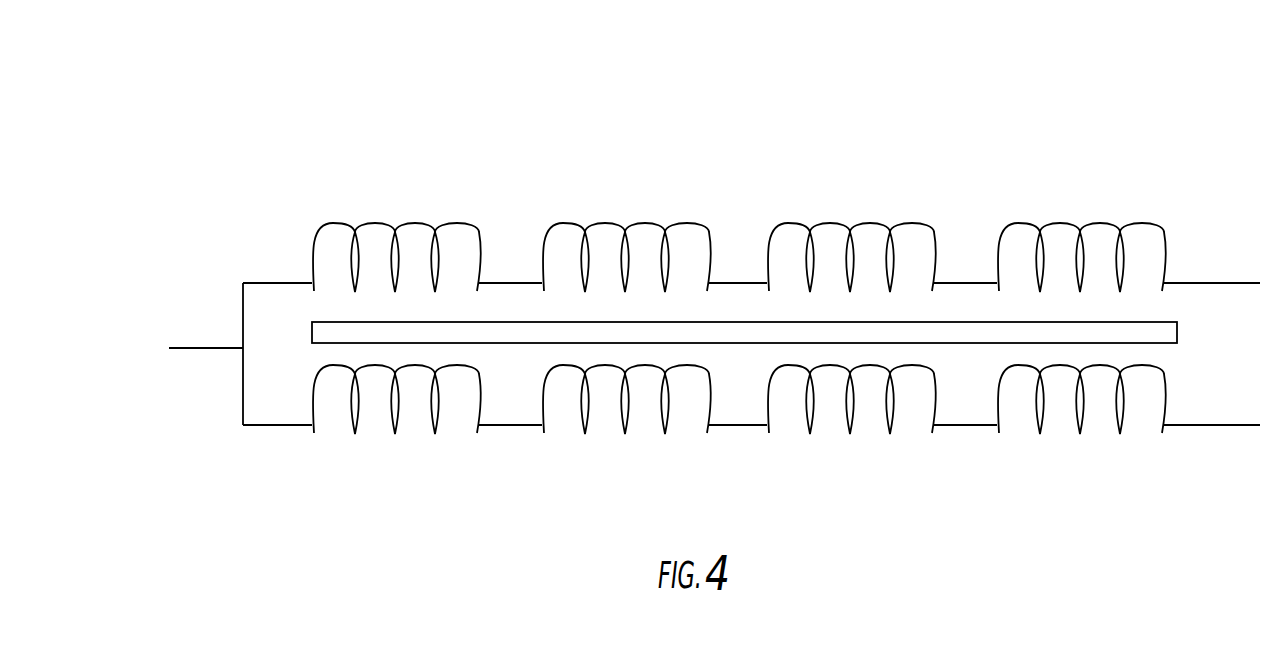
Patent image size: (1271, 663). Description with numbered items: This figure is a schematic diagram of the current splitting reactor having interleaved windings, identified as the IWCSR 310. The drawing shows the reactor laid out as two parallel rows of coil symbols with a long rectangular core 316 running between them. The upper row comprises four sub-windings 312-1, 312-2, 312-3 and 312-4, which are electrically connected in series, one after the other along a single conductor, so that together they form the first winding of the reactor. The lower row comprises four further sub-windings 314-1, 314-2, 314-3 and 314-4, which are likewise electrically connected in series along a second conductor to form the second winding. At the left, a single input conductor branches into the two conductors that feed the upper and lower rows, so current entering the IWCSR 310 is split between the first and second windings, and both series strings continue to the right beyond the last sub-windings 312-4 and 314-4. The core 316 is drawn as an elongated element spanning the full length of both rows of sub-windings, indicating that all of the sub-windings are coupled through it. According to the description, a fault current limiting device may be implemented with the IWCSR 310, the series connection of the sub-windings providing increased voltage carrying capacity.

The IWCSR 310 is at (453, 42).
The sub-winding 312-1 is at (422, 210).
The sub-winding 312-2 is at (655, 210).
The sub-winding 312-3 is at (885, 210).
The sub-winding 312-4 is at (1117, 210).
The sub-winding 314-1 is at (423, 476).
The sub-winding 314-2 is at (655, 476).
The sub-winding 314-3 is at (885, 476).
The sub-winding 314-4 is at (1117, 476).
The core 316 is at (332, 307).